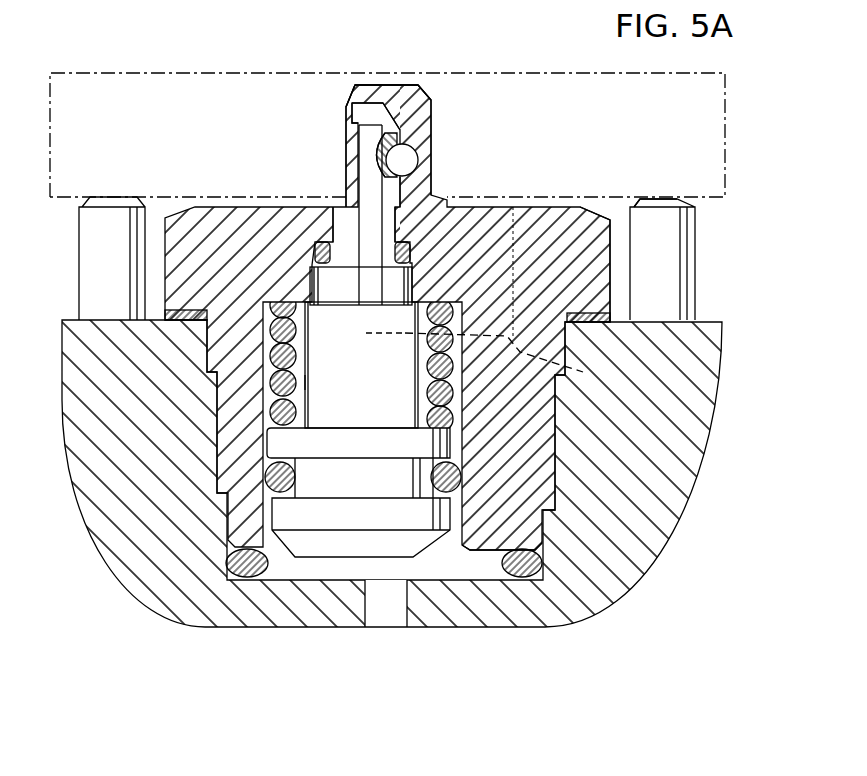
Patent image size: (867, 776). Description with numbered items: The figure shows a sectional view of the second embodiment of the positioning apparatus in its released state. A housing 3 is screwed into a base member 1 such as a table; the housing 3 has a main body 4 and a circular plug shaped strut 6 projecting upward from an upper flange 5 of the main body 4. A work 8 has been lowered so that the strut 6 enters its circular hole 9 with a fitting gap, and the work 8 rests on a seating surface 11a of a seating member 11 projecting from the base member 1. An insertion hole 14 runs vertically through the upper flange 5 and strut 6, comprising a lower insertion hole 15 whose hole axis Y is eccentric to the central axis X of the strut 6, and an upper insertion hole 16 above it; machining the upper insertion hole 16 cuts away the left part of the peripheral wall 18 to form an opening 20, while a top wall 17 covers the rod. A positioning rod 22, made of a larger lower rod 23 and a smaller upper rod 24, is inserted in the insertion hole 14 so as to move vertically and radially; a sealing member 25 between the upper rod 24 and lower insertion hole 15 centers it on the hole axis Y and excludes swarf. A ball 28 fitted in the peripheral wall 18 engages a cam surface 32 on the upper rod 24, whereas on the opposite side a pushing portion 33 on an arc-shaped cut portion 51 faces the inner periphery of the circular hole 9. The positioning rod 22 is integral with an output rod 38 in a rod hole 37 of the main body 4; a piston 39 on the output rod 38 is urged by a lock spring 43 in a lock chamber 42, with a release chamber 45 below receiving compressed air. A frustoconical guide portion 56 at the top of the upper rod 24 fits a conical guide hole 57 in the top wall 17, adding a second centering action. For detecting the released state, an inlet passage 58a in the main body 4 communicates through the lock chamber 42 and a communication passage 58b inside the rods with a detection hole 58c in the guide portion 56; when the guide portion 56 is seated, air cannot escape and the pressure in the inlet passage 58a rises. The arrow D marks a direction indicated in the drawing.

The base member 1 is at (650, 565).
The housing 3 is at (612, 273).
The main body 4 is at (490, 546).
The upper flange 5 is at (606, 240).
The strut 6 is at (435, 138).
The work 8 is at (152, 72).
The circular hole 9 is at (344, 88).
The seating member 11 is at (702, 262).
The seating surface 11a is at (664, 197).
The insertion hole 14 is at (331, 306).
The lower insertion hole 15 is at (319, 284).
The upper insertion hole 16 is at (337, 207).
The top wall 17 is at (346, 89).
The peripheral wall 18 is at (428, 166).
The opening 20 is at (347, 109).
The positioning rod 22 is at (344, 153).
The lower rod 23 is at (352, 306).
The upper rod 24 is at (368, 146).
The sealing member 25 is at (381, 262).
The ball 28 is at (419, 154).
The cam surface 32 is at (412, 122).
The pushing portion 33 is at (366, 128).
The rod hole 37 is at (272, 438).
The output rod 38 is at (334, 558).
The piston 39 is at (366, 455).
The lock chamber 42 is at (305, 377).
The lock spring 43 is at (296, 415).
The release chamber 45 is at (285, 572).
The cut portion 51 is at (354, 221).
The guide portion 56 is at (380, 108).
The guide hole 57 is at (358, 92).
The inlet passage 58a is at (518, 304).
The communication passage 58b is at (383, 417).
The detection hole 58c is at (420, 80).
The central axis X is at (366, 333).
The hole axis Y is at (395, 340).
The flow direction D is at (417, 565).